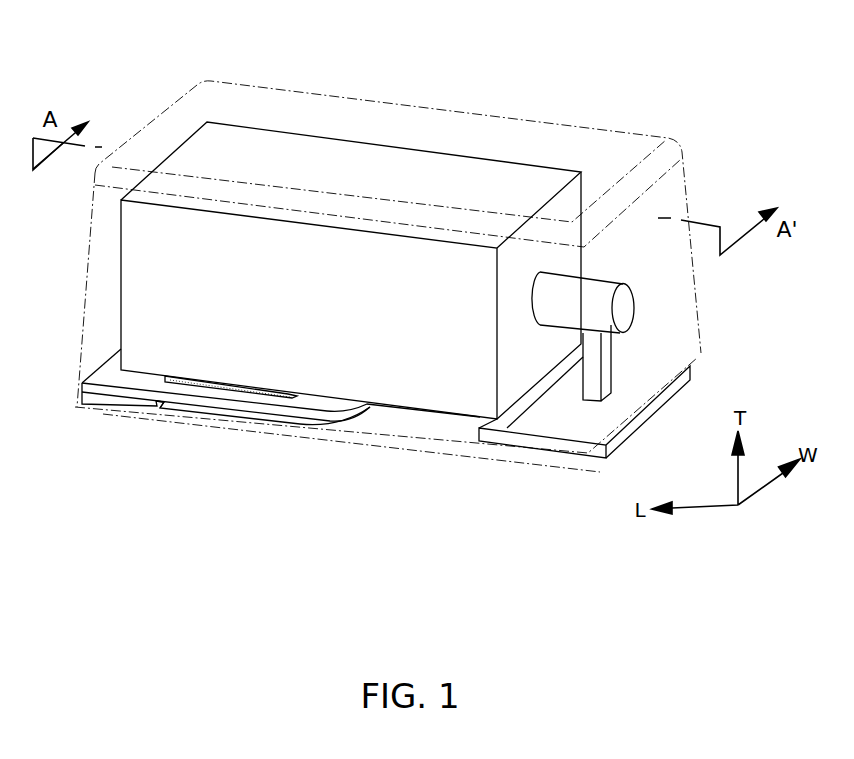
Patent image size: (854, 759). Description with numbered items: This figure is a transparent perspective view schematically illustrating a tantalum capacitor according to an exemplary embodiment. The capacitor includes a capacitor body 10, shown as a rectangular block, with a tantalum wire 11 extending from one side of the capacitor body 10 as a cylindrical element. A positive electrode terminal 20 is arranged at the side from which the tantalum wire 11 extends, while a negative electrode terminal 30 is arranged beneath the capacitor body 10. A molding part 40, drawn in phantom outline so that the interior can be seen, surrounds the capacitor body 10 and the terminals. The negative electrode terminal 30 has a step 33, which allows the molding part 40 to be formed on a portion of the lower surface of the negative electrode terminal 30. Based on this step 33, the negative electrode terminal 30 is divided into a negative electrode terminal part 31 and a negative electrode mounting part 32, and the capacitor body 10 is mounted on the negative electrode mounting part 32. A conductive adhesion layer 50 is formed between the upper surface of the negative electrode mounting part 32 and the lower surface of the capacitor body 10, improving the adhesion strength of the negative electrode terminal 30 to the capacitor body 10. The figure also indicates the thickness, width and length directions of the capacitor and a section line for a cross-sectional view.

The capacitor body 10 is at (372, 158).
The tantalum wire 11 is at (598, 288).
The positive electrode terminal 20 is at (545, 468).
The negative electrode terminal 30 is at (275, 463).
The negative electrode terminal part 31 is at (103, 407).
The negative electrode mounting part 32 is at (217, 405).
The step 33 is at (160, 408).
The molding part 40 is at (486, 122).
The conductive adhesion layer 50 is at (75, 534).